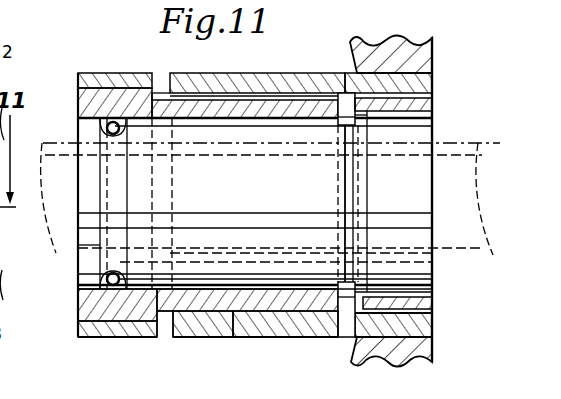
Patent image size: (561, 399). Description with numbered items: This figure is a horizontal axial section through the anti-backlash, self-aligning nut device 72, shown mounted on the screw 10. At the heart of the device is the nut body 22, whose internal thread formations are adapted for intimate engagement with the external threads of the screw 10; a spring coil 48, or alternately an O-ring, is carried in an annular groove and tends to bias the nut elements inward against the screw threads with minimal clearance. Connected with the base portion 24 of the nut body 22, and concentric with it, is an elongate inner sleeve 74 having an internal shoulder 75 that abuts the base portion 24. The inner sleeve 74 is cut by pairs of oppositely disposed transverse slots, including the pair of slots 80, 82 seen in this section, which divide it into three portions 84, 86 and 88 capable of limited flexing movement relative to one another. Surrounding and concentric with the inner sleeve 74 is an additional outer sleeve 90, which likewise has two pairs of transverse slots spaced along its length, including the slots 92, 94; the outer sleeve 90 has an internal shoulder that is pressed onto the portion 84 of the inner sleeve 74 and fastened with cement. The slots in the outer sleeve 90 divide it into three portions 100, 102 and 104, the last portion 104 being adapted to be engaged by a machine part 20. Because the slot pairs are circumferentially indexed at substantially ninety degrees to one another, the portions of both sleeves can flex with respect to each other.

The screw 10 is at (448, 147).
The machine part 20 is at (383, 37).
The nut body 22 is at (268, 286).
The base portion 24 is at (413, 190).
The spring coil 48 is at (112, 288).
The anti-backlash, self-aligning nut device 72 is at (110, 58).
The sleeve 74 is at (72, 301).
The internal shoulder 75 is at (368, 113).
The transverse slot 80 is at (343, 93).
The transverse slot 82 is at (344, 318).
The portion 84 is at (119, 313).
The portion 86 is at (247, 300).
The portion 88 is at (428, 300).
The sleeve 90 is at (306, 346).
The transverse slot 92 is at (166, 97).
The transverse slot 94 is at (170, 330).
The portion 100 is at (97, 78).
The portion 102 is at (238, 80).
The portion 104 is at (420, 80).